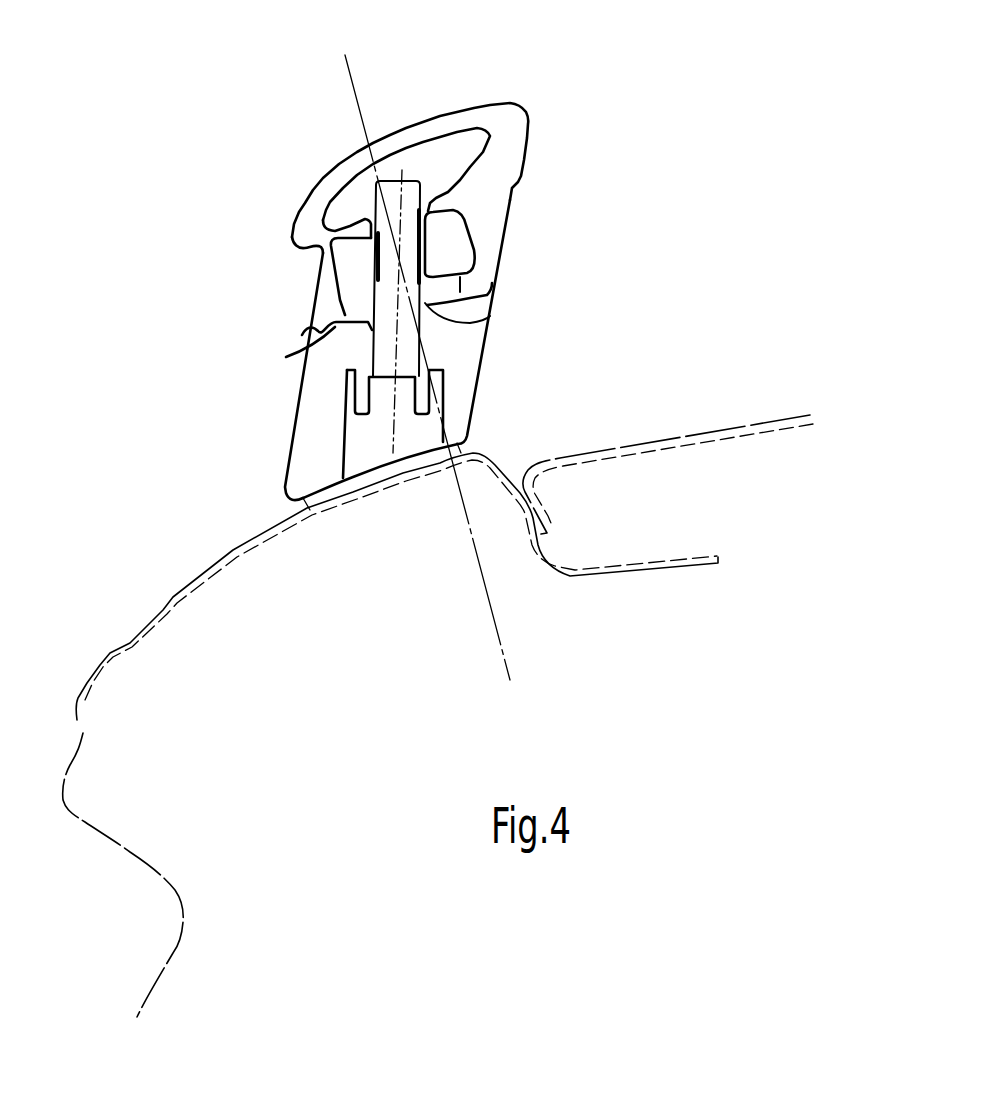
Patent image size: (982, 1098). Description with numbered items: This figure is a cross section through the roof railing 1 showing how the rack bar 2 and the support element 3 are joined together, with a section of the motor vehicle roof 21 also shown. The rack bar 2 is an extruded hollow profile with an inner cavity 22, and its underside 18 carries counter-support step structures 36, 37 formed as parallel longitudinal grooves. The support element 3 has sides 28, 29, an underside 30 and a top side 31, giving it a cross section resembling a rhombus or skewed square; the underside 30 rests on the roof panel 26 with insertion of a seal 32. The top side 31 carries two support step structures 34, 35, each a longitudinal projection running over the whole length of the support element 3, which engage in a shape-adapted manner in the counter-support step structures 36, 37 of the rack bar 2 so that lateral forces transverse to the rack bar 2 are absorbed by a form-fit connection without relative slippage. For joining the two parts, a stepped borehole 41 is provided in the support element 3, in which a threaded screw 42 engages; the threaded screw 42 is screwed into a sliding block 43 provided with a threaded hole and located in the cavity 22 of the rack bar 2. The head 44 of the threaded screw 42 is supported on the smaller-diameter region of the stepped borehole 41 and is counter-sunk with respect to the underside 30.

The roof railing 1 is at (173, 278).
The rack bar 2 is at (512, 208).
The support element 3 is at (483, 382).
The underside of the rack bar 18 is at (478, 323).
The motor vehicle roof 21 is at (195, 573).
The cavity 22 is at (453, 210).
The roof panel 26 is at (363, 493).
The side 28 is at (287, 472).
The side 29 is at (473, 413).
The underside 30 is at (332, 490).
The top side 31 is at (330, 300).
The seal 32 is at (403, 462).
The support step structure 34 is at (308, 357).
The support step structure 35 is at (445, 312).
The counter-support step structure 36 is at (315, 326).
The counter-support step structure 37 is at (477, 263).
The stepped borehole 41 is at (367, 433).
The threaded screw 42 is at (372, 337).
The sliding block 43 is at (455, 238).
The head 44 is at (360, 389).